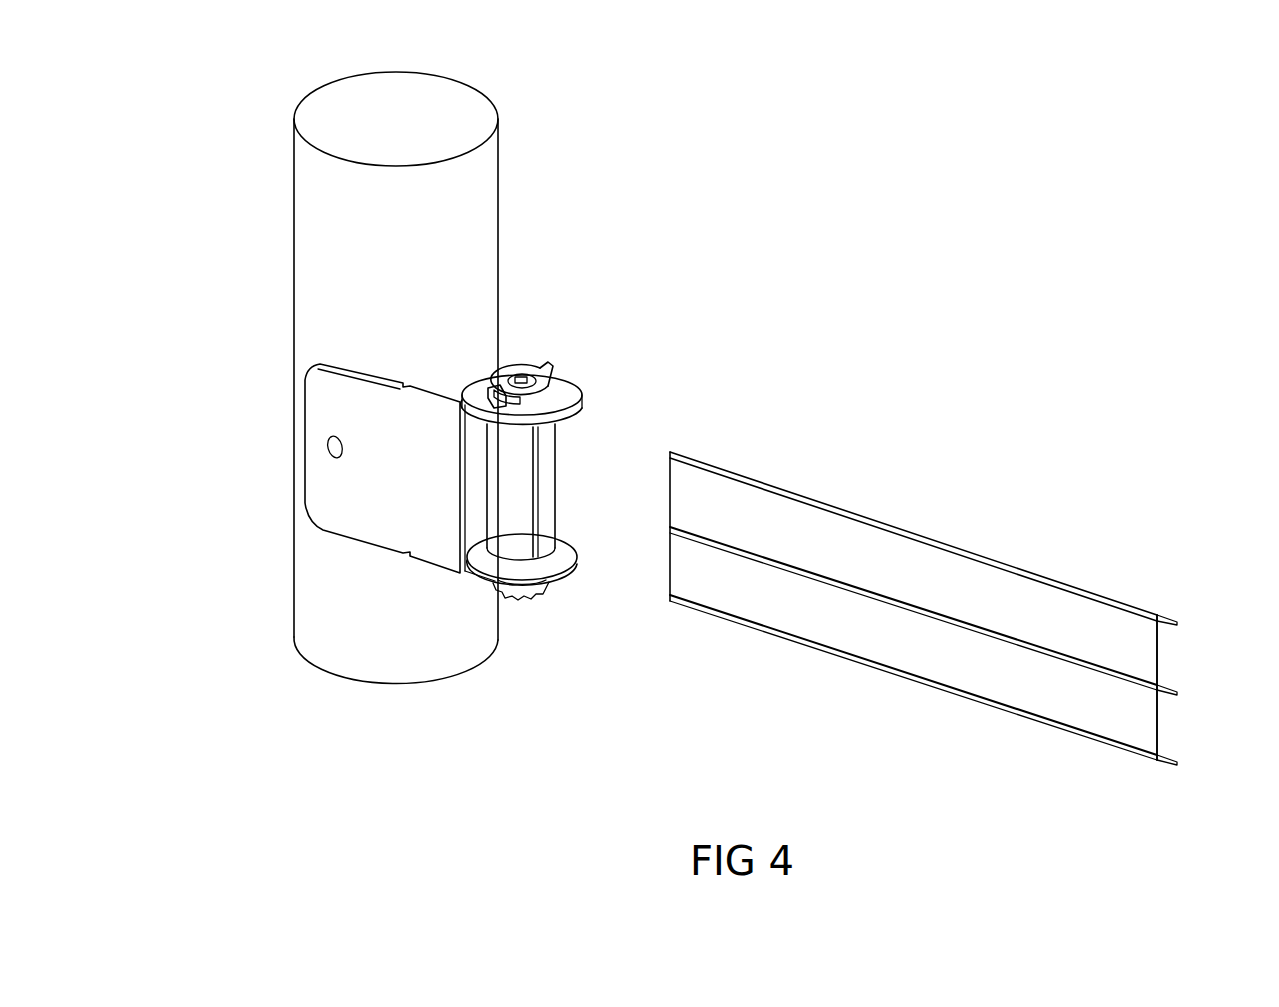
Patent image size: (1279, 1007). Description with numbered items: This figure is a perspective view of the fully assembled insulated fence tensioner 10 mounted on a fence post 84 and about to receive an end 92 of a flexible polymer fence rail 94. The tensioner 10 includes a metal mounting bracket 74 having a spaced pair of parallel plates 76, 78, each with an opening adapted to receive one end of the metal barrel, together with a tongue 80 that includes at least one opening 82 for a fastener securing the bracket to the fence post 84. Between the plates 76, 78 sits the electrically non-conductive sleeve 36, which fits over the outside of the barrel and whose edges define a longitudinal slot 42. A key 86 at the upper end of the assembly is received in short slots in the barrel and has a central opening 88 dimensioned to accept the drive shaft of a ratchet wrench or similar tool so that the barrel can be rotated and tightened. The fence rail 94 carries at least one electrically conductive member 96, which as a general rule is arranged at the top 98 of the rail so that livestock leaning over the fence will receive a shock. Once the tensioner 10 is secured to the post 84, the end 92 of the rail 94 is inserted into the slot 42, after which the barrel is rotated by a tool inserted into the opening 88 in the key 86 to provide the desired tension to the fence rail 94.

The fence tensioner 10 is at (640, 355).
The electrically non-conductive sleeve 36 is at (515, 532).
The longitudinal slot 42 is at (540, 484).
The metal mounting bracket 74 is at (358, 505).
The upper plate 76 is at (562, 382).
The plate 78 is at (567, 552).
The tongue 80 is at (343, 407).
The opening 82 is at (335, 447).
The fence post 84 is at (478, 250).
The key 86 is at (542, 362).
The central opening 88 is at (522, 373).
The end of fence rail 92 is at (939, 608).
The flexible polymer fence rail 94 is at (883, 640).
The electrically conductive member 96 is at (1173, 622).
The top of fence rail 98 is at (873, 515).